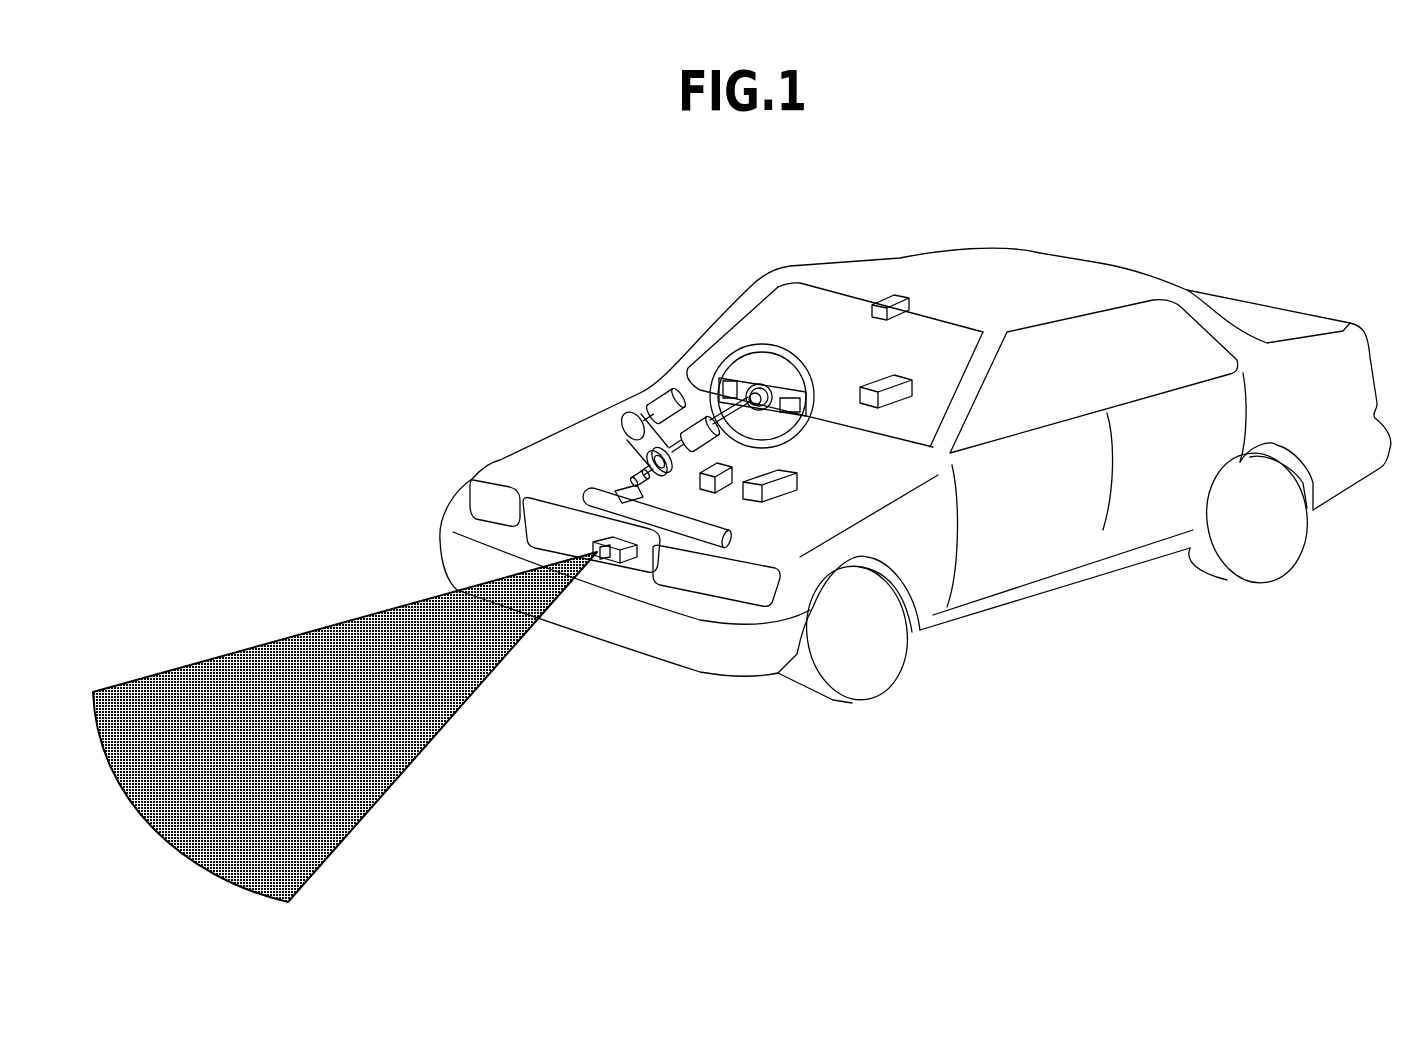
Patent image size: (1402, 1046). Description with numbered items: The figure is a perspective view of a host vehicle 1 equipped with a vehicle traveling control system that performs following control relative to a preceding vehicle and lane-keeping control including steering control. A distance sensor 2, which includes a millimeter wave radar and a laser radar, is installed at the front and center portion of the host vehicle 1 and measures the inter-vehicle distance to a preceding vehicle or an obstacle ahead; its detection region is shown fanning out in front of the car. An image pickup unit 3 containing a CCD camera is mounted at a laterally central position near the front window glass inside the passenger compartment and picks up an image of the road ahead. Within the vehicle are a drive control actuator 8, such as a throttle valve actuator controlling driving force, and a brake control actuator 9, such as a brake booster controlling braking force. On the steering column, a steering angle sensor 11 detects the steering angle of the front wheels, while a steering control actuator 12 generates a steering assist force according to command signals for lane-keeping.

The host vehicle 1 is at (1035, 270).
The distance sensor 2 is at (628, 562).
The image pickup unit 3 is at (893, 296).
The drive control actuator 8 is at (723, 485).
The brake control actuator 9 is at (778, 490).
The steering angle sensor 11 is at (700, 420).
The steering control actuator 12 is at (630, 412).